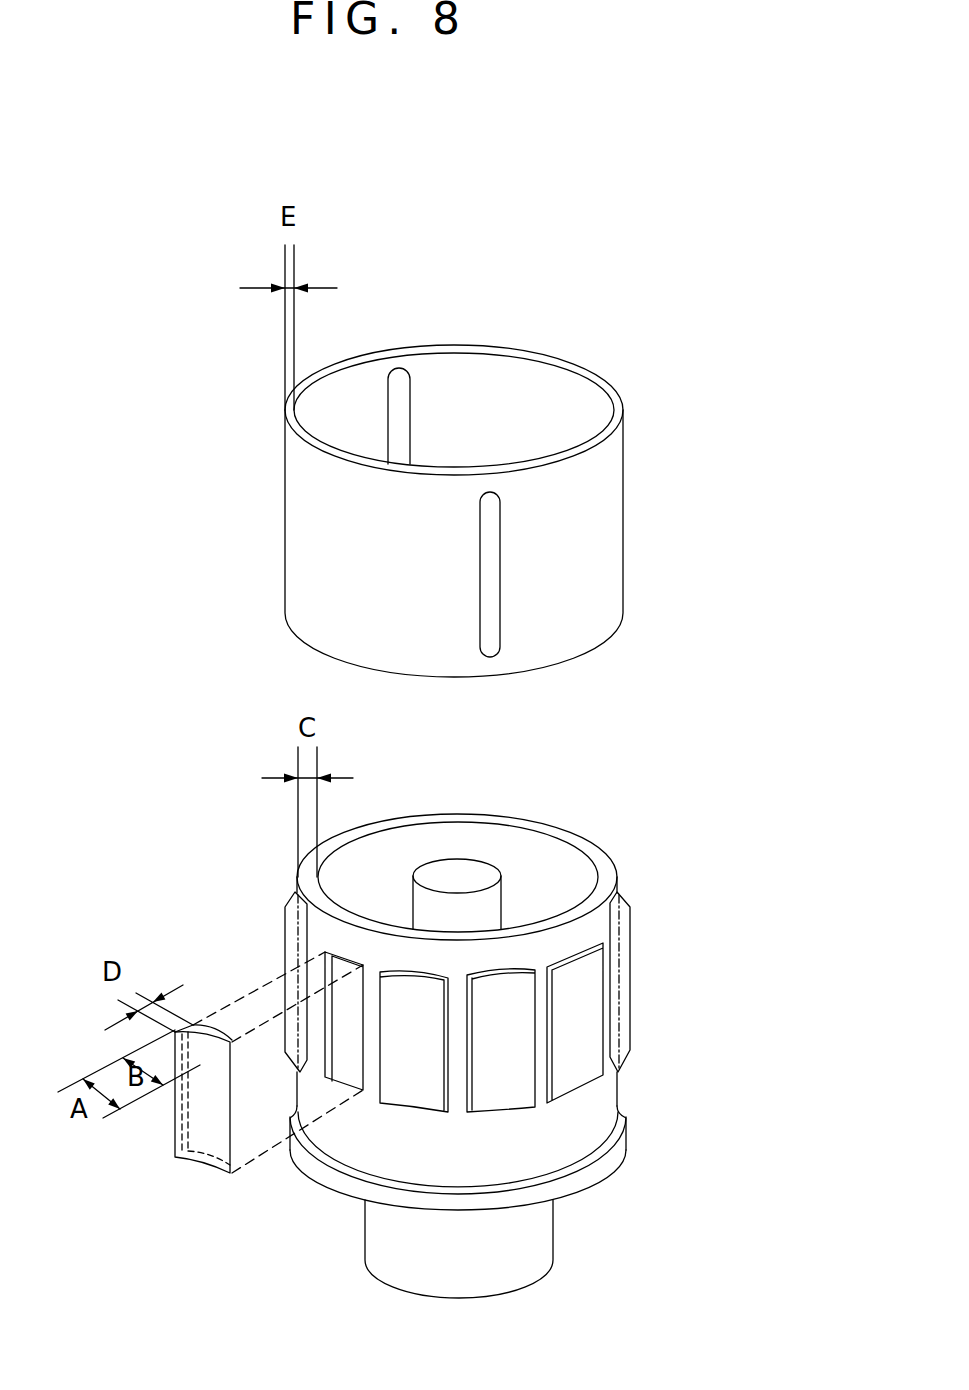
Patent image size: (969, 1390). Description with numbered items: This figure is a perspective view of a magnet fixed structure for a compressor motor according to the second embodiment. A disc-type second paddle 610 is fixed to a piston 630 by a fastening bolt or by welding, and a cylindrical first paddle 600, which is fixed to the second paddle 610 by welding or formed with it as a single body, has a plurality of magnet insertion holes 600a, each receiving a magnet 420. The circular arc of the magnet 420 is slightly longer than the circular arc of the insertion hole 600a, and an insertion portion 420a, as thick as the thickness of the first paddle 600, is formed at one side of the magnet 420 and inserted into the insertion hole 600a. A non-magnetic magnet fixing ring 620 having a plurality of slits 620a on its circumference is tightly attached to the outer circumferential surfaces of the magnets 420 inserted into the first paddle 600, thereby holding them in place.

The magnet fixing ring 620 is at (270, 526).
The slits 620a is at (407, 397).
The piston 630 is at (475, 868).
The first paddle 600 is at (628, 1093).
The magnet insertion holes 600a is at (348, 1070).
The second paddle 610 is at (592, 1192).
The magnet 420 is at (136, 1067).
The insertion portion 420a is at (200, 1028).